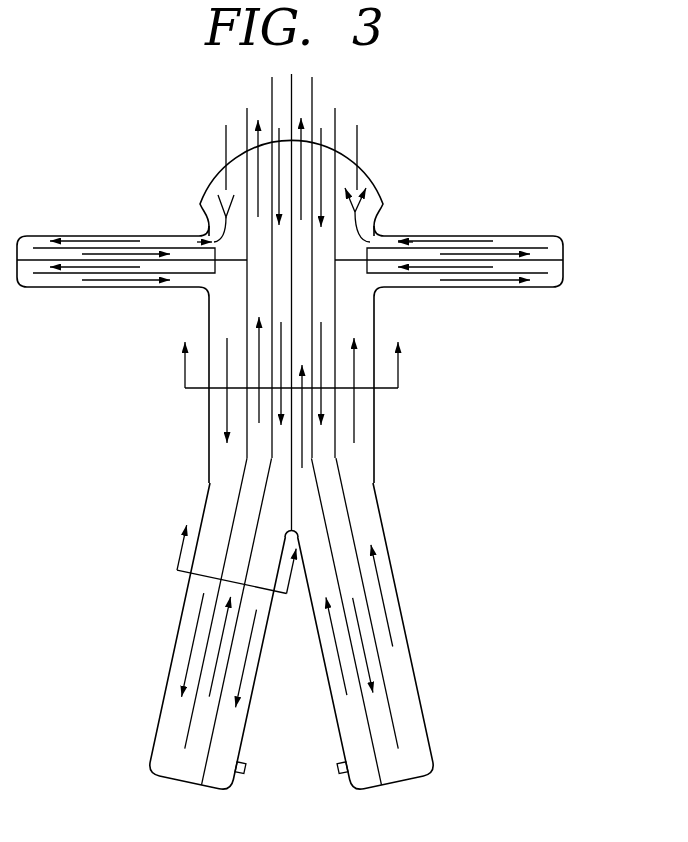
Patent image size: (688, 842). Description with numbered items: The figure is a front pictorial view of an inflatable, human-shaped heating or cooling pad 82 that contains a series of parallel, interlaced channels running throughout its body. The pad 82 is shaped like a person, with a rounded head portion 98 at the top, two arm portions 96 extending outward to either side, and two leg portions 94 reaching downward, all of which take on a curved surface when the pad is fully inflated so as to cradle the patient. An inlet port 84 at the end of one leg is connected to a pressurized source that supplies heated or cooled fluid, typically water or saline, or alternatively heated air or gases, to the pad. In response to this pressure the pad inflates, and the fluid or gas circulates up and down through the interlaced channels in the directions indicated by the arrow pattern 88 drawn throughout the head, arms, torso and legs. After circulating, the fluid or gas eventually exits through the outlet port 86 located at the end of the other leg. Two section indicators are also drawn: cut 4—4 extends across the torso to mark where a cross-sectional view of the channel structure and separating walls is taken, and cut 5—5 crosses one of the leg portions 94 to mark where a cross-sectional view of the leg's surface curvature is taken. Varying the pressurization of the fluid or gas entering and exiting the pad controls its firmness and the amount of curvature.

The heating or cooling pad 82 is at (410, 128).
The head portion 98 is at (187, 127).
The arm portions 96 is at (543, 235).
The arrow pattern 88 is at (378, 587).
The leg portions 94 is at (163, 693).
The outlet port 86 is at (240, 774).
The inlet port 84 is at (343, 774).
The cut 4- 4 is at (292, 383).
The cut 5- 5 is at (228, 576).